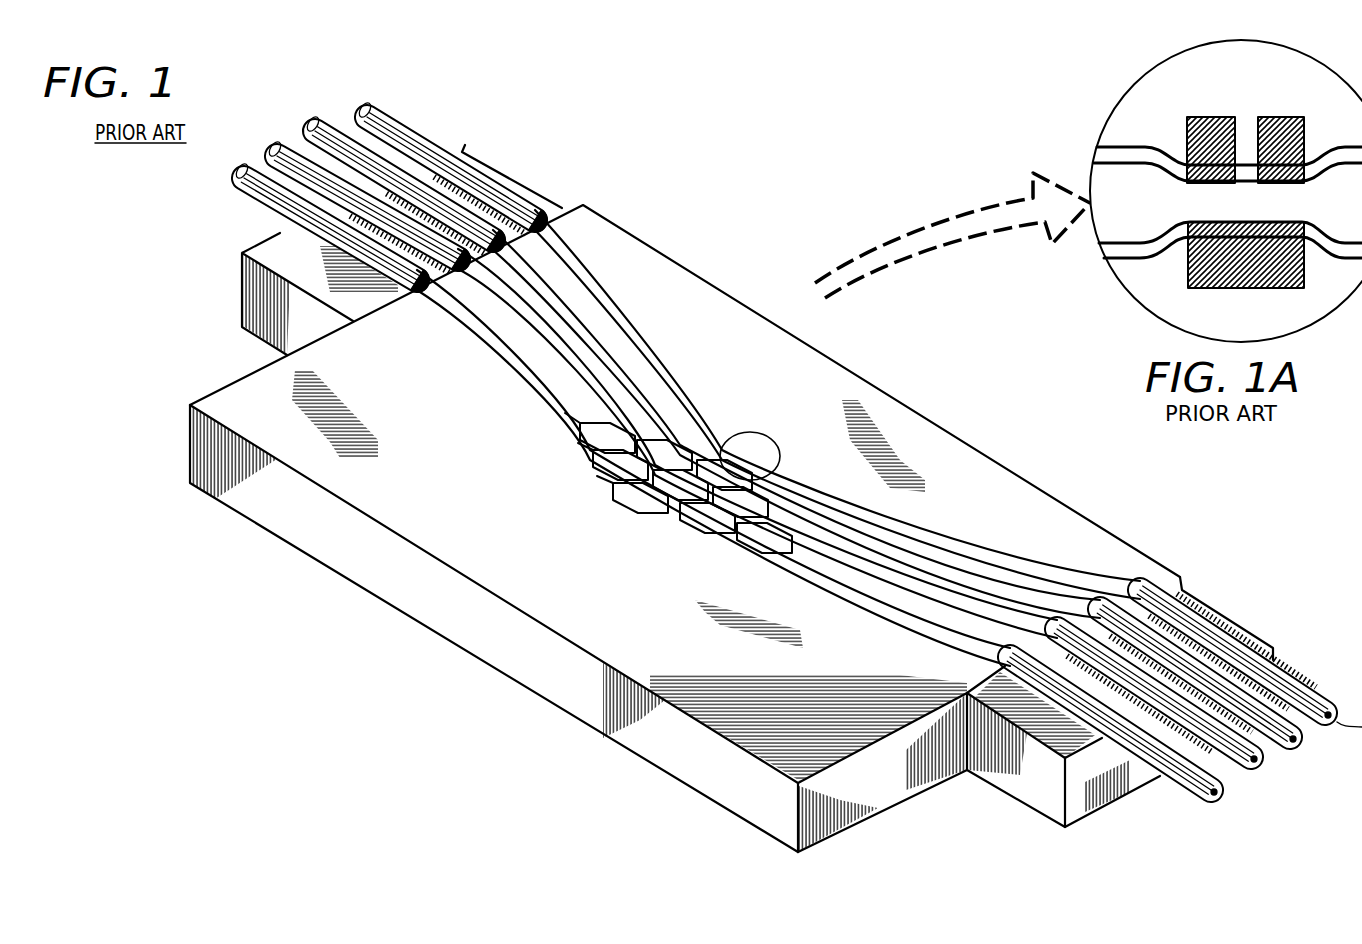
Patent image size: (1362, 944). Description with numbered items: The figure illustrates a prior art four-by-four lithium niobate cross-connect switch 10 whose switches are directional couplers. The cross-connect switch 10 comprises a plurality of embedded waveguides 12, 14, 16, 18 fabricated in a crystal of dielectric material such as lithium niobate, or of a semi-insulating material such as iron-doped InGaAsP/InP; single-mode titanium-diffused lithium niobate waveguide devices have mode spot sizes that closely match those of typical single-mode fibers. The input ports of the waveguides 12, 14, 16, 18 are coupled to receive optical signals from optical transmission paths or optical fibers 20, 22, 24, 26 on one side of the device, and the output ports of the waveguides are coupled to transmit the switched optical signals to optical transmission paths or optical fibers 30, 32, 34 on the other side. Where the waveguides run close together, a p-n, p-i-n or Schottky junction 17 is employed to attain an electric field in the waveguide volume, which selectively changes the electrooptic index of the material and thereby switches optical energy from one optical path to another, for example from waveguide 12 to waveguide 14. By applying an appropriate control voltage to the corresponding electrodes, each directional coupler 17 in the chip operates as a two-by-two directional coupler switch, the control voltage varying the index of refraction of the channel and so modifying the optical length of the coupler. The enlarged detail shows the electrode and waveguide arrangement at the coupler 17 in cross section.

The cross-connect switch 10 is at (753, 187).
The embedded waveguide 12 is at (627, 321).
The embedded waveguide 14 is at (627, 389).
The embedded waveguide 16 is at (547, 327).
The junction / directional coupler 17 is at (772, 448).
The embedded waveguide 18 is at (472, 320).
The optical fiber 20 is at (412, 128).
The optical fiber 22 is at (304, 124).
The optical fiber 24 is at (266, 150).
The optical fiber 26 is at (238, 184).
The optical fiber 30 is at (1298, 748).
The optical fiber 32 is at (1256, 781).
The optical fiber 34 is at (1210, 802).